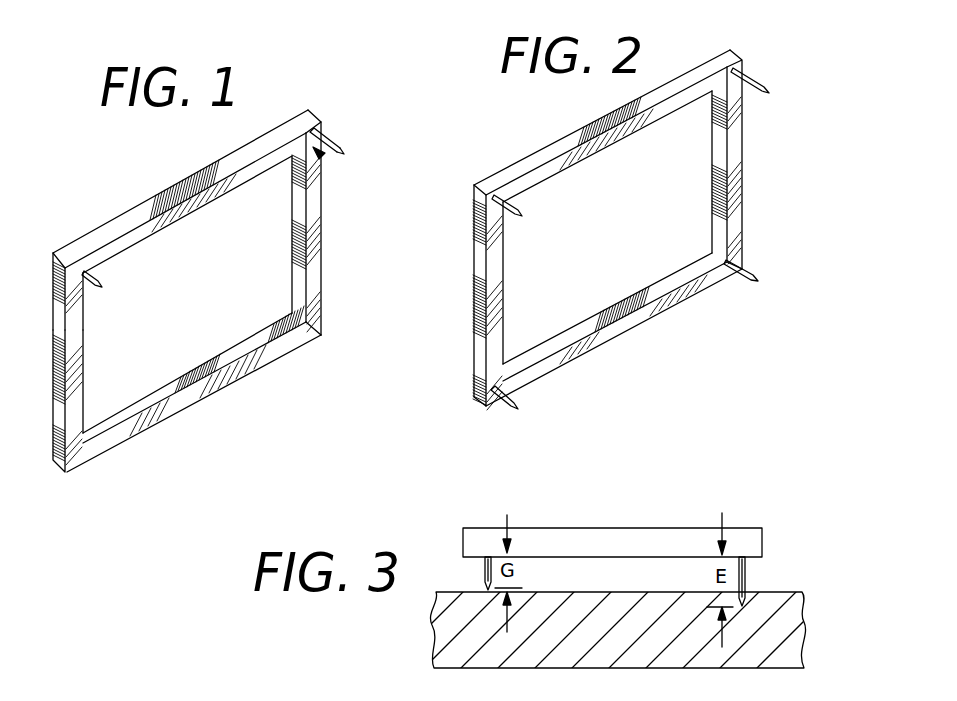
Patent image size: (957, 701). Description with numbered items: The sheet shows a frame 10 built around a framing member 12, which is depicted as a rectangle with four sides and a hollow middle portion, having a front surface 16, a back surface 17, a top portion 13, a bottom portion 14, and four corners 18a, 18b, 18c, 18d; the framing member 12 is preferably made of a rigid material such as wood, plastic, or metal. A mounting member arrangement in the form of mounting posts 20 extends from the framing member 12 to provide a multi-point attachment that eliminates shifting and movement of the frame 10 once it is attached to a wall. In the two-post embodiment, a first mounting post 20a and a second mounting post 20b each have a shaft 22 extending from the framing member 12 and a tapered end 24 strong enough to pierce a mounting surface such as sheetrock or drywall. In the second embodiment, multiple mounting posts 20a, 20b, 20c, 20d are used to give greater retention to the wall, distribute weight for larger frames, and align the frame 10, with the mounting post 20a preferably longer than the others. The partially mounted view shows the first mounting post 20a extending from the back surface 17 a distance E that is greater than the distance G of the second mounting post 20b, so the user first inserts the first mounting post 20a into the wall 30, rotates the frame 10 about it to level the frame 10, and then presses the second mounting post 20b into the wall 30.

In FIG. 1, the frame 10 is at (348, 253).
In FIG. 2, the frame 10 is at (767, 175).
In FIG. 3, the frame 10 is at (675, 512).
In FIG. 1, the framing member 12 is at (140, 212).
In FIG. 2, the framing member 12 is at (557, 152).
In FIG. 3, the framing member 12 is at (574, 543).
In FIG. 1, the top portion 13 is at (210, 165).
In FIG. 1, the bottom portion 14 is at (155, 412).
In FIG. 1, the front surface 16 is at (228, 350).
In FIG. 1, the back surface 17 is at (312, 198).
In FIG. 1, the corner 18a is at (52, 278).
In FIG. 1, the corner 18b is at (308, 109).
In FIG. 1, the corner 18c is at (66, 414).
In FIG. 1, the corner 18d is at (331, 337).
In FIG. 1, the mounting posts 20 is at (295, 165).
In FIG. 1, the first mounting post 20a is at (335, 140).
In FIG. 2, the first mounting post 20a is at (755, 82).
In FIG. 3, the first mounting post 20a is at (748, 572).
In FIG. 1, the second mounting post 20b is at (99, 284).
In FIG. 2, the second mounting post 20b is at (523, 210).
In FIG. 3, the second mounting post 20b is at (483, 570).
In FIG. 2, the mounting post 20c is at (515, 404).
In FIG. 2, the mounting post 20d is at (745, 268).
In FIG. 1, the shaft 22 is at (340, 142).
In FIG. 1, the tapered end 24 is at (345, 153).
In FIG. 3, the wall 30 is at (622, 645).